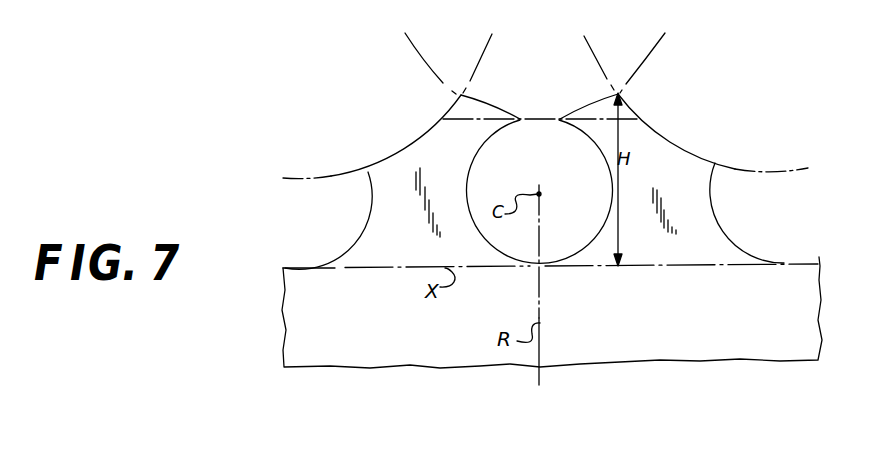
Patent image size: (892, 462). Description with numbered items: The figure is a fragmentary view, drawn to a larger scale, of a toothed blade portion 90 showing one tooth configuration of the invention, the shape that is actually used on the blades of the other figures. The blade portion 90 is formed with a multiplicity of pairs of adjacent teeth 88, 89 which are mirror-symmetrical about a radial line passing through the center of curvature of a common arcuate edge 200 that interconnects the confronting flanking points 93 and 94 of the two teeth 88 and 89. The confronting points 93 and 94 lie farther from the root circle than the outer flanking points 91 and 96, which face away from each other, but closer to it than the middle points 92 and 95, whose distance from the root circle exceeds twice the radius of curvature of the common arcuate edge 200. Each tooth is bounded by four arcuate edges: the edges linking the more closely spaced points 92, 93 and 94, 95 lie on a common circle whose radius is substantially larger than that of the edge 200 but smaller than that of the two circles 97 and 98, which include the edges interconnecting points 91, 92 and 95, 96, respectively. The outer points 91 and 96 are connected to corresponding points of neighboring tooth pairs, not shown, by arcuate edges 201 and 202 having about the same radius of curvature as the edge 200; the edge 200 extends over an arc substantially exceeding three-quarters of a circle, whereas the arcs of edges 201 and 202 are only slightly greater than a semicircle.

The tooth 88 is at (392, 268).
The tooth 89 is at (687, 247).
The blade portion 90 is at (612, 345).
The outer flanking point 91 is at (368, 170).
The middle point 92 is at (461, 93).
The confronting flanking point 93 is at (521, 118).
The confronting flanking point 94 is at (560, 118).
The middle point 95 is at (619, 92).
The outer flanking point 96 is at (716, 164).
The circle 97 is at (305, 177).
The circle 98 is at (785, 169).
The common arcuate edge 200 is at (588, 140).
The arcuate edge 201 is at (352, 243).
The arcuate edge 202 is at (740, 253).